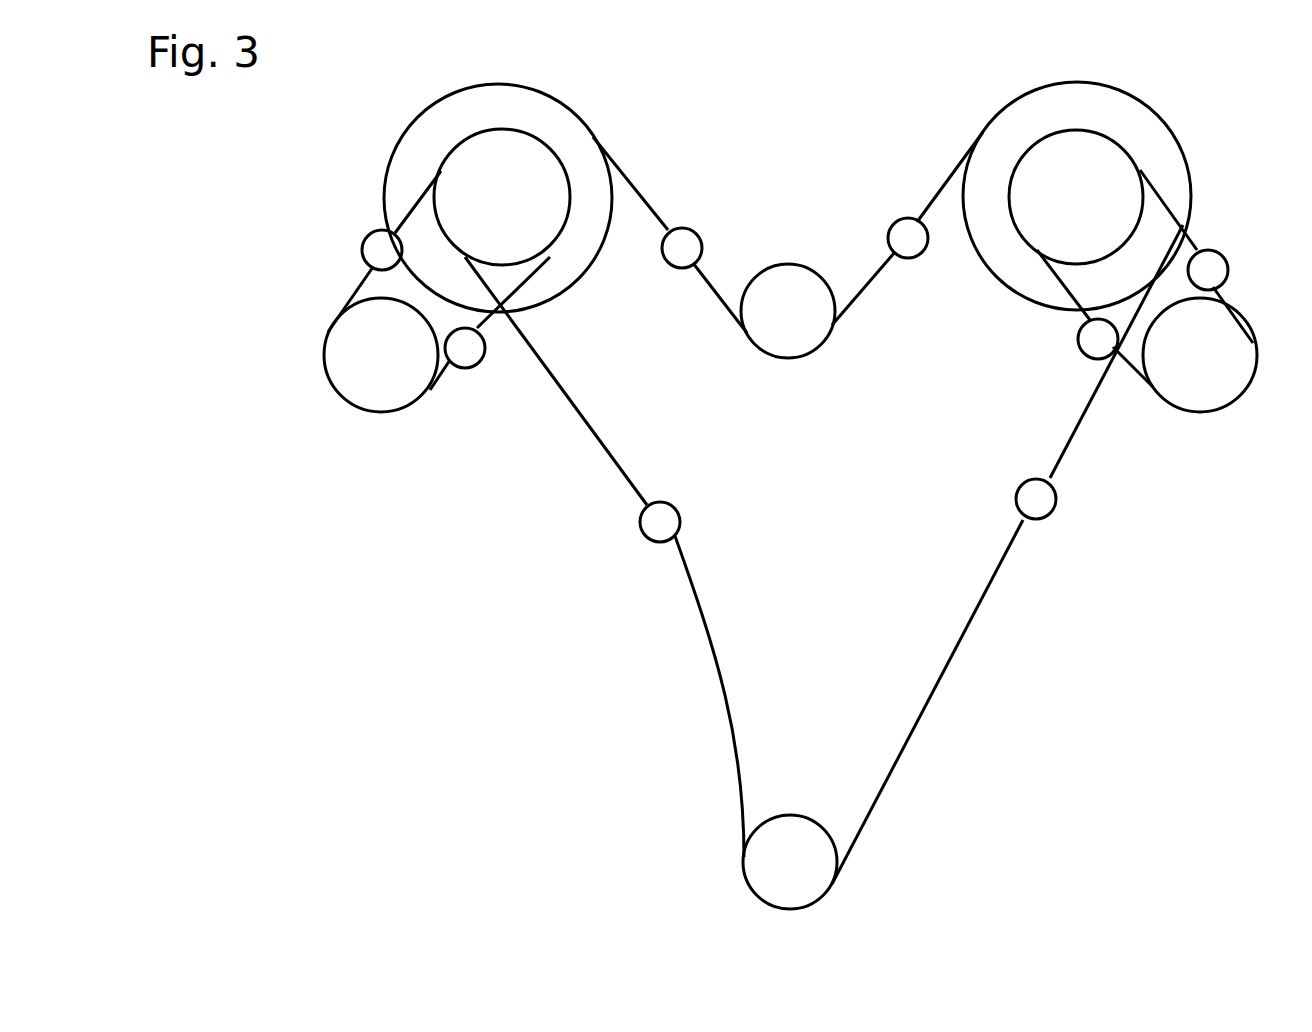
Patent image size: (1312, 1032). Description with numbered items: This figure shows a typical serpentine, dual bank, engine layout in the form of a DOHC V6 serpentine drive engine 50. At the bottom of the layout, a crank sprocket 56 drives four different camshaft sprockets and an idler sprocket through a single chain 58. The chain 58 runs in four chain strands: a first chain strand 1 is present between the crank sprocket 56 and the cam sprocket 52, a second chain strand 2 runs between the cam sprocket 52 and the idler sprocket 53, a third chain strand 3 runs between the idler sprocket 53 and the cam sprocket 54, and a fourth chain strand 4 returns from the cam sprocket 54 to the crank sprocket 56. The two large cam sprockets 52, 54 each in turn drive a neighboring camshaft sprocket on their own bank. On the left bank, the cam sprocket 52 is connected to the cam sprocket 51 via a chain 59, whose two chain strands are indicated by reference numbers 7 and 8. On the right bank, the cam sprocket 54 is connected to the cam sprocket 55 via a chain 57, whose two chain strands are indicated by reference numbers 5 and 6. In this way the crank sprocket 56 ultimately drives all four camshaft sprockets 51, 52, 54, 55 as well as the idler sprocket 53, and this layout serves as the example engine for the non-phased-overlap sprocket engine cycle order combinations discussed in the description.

The DOHC V6 serpentine drive engine 50 is at (192, 134).
The cam sprocket 51 is at (381, 349).
The cam sprocket 52 is at (490, 220).
The idler sprocket 53 is at (771, 324).
The cam sprocket 54 is at (1052, 224).
The cam sprocket 55 is at (1193, 376).
The crank sprocket 56 is at (780, 867).
The chain 57 is at (1197, 243).
The chain 58 is at (719, 654).
The chain 59 is at (360, 278).
The first chain strand 1 is at (660, 522).
The second chain strand 2 is at (682, 248).
The third chain strand 3 is at (908, 238).
The fourth chain strand 4 is at (1036, 499).
The chain strand 5 is at (1208, 270).
The chain strand 6 is at (1098, 339).
The chain strand 7 is at (382, 250).
The chain strand 8 is at (465, 348).